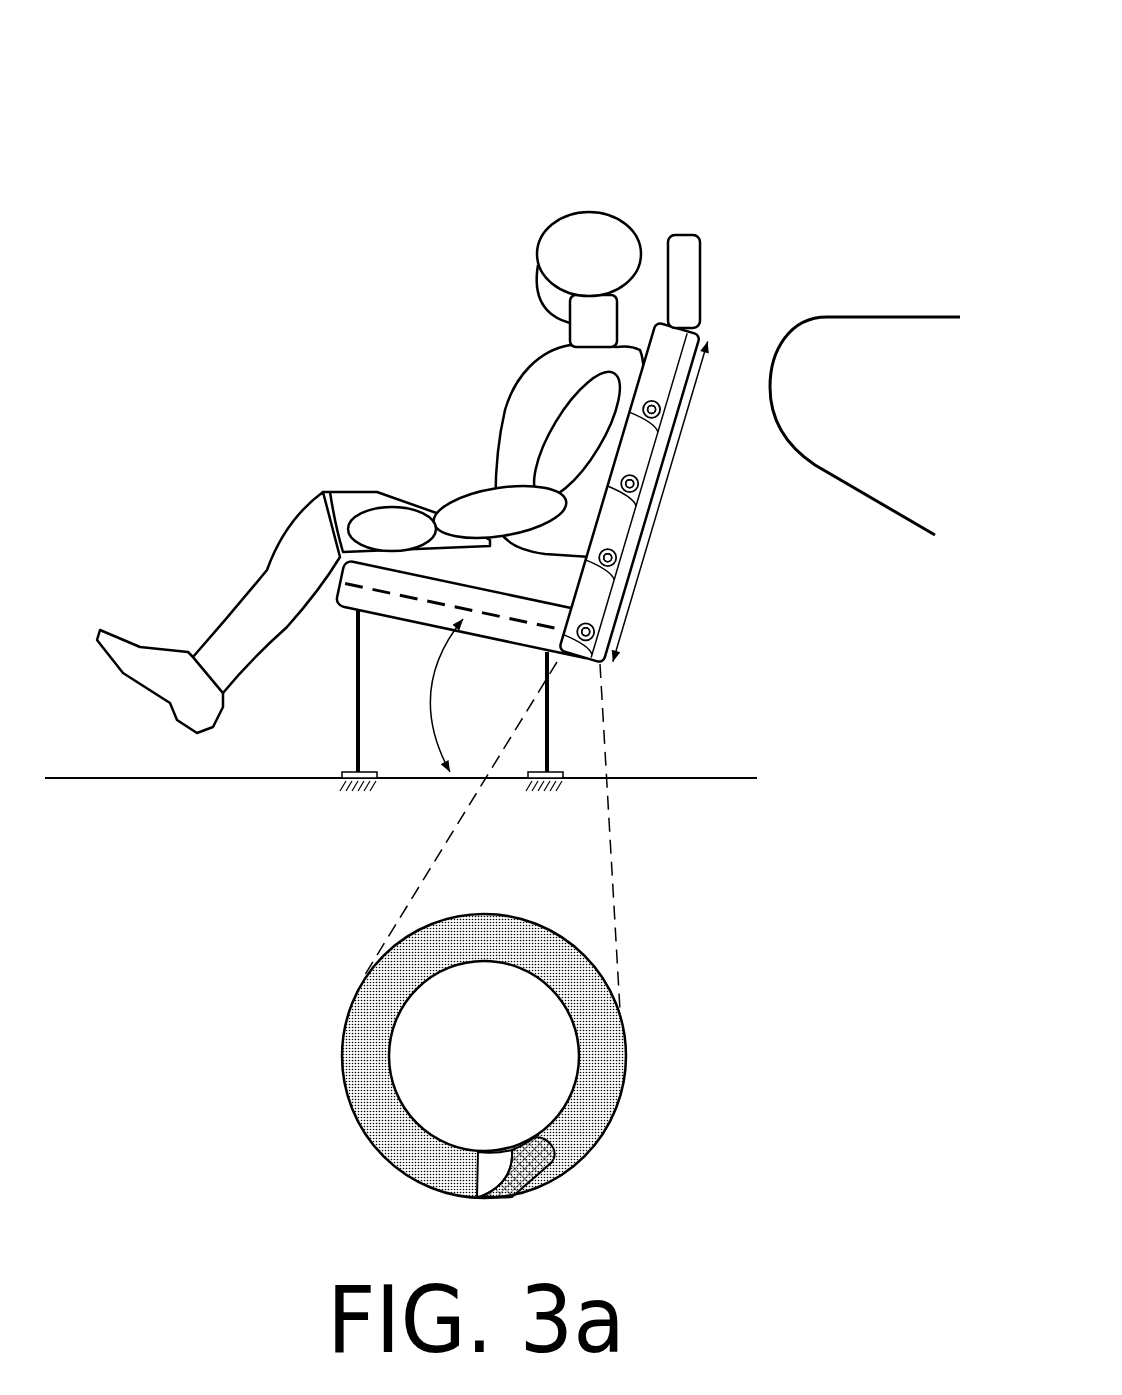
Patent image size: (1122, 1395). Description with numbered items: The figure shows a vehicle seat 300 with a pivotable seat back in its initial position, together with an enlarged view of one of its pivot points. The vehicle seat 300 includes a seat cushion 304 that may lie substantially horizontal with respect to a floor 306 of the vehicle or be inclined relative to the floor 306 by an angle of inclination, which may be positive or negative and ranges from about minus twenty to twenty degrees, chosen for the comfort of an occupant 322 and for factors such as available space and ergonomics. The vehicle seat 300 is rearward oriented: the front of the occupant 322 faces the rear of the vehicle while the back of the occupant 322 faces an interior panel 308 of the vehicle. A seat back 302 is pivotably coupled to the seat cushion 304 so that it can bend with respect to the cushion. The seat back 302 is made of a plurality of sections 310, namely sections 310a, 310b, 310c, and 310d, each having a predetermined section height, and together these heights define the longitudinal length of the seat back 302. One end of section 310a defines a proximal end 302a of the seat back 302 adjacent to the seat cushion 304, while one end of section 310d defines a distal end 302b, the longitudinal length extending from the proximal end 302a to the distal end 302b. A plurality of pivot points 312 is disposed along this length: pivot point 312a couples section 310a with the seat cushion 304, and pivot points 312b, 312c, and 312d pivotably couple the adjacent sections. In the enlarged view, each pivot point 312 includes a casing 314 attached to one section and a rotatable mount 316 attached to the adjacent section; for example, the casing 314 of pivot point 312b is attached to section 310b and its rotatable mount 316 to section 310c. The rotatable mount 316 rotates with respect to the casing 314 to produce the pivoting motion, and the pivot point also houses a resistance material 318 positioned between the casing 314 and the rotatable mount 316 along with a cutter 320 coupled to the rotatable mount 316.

The vehicle seat 300 is at (563, 509).
The seat back 302 is at (660, 593).
The proximal end 302a is at (603, 665).
The distal end 302b is at (642, 292).
The seat cushion 304 is at (358, 600).
The floor 306 is at (204, 781).
The interior panel 308 is at (843, 317).
The plurality of sections 310 is at (767, 576).
The section 310a is at (616, 613).
The section 310b is at (640, 540).
The section 310c is at (661, 463).
The section 310d is at (681, 398).
The plurality of pivot points 312 is at (482, 695).
The pivot point 312a is at (578, 623).
The pivot point 312b is at (600, 550).
The pivot point 312c is at (622, 475).
The pivot point 312d is at (645, 404).
The casing 314 is at (618, 1104).
The rotatable mount 316 is at (390, 1072).
The resistance material 318 is at (362, 1082).
The cutter 320 is at (533, 1180).
The occupant 322 is at (263, 560).